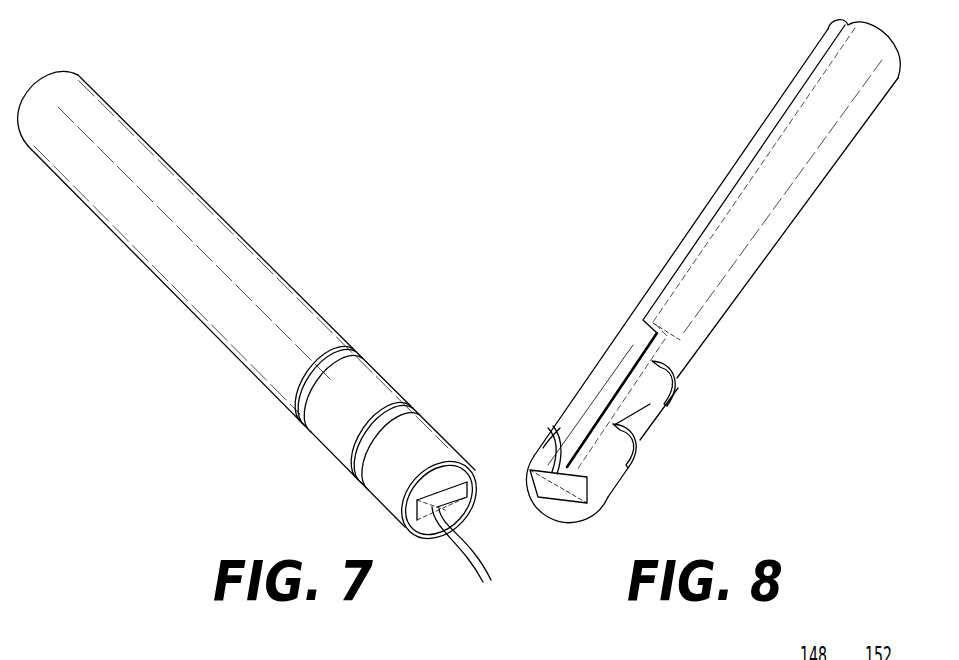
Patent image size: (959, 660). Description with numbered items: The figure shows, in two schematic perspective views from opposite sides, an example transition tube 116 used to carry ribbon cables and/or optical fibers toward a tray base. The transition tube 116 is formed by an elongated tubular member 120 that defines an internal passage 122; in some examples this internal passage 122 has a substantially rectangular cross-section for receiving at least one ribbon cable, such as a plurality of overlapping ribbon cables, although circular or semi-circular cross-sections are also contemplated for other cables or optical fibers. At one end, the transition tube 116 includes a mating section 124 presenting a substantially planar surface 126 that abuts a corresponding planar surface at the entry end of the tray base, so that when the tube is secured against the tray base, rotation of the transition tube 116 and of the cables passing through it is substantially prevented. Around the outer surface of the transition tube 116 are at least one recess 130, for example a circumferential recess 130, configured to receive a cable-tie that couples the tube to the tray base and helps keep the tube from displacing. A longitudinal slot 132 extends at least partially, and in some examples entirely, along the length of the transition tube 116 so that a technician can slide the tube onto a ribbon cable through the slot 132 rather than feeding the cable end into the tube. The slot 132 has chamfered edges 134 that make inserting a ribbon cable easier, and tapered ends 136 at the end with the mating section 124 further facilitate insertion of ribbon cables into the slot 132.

In FIG. 7, the transition tube 116 is at (274, 327).
In FIG. 8, the transition tube 116 is at (696, 304).
In FIG. 7, the elongated tubular member 120 is at (183, 195).
In FIG. 8, the elongated tubular member 120 is at (838, 135).
In FIG. 7, the internal passage 122 is at (463, 488).
In FIG. 8, the internal passage 122 is at (566, 498).
In FIG. 8, the mating section 124 is at (632, 400).
In FIG. 8, the substantially planar surface 126 is at (562, 427).
In FIG. 7, the recess 130 is at (348, 366).
In FIG. 8, the recess 130 is at (672, 383).
In FIG. 8, the longitudinal slot 132 is at (657, 302).
In FIG. 8, the chamfered edges 134 is at (628, 327).
In FIG. 7, the tapered ends 136 is at (488, 581).
In FIG. 8, the tapered ends 136 is at (557, 445).